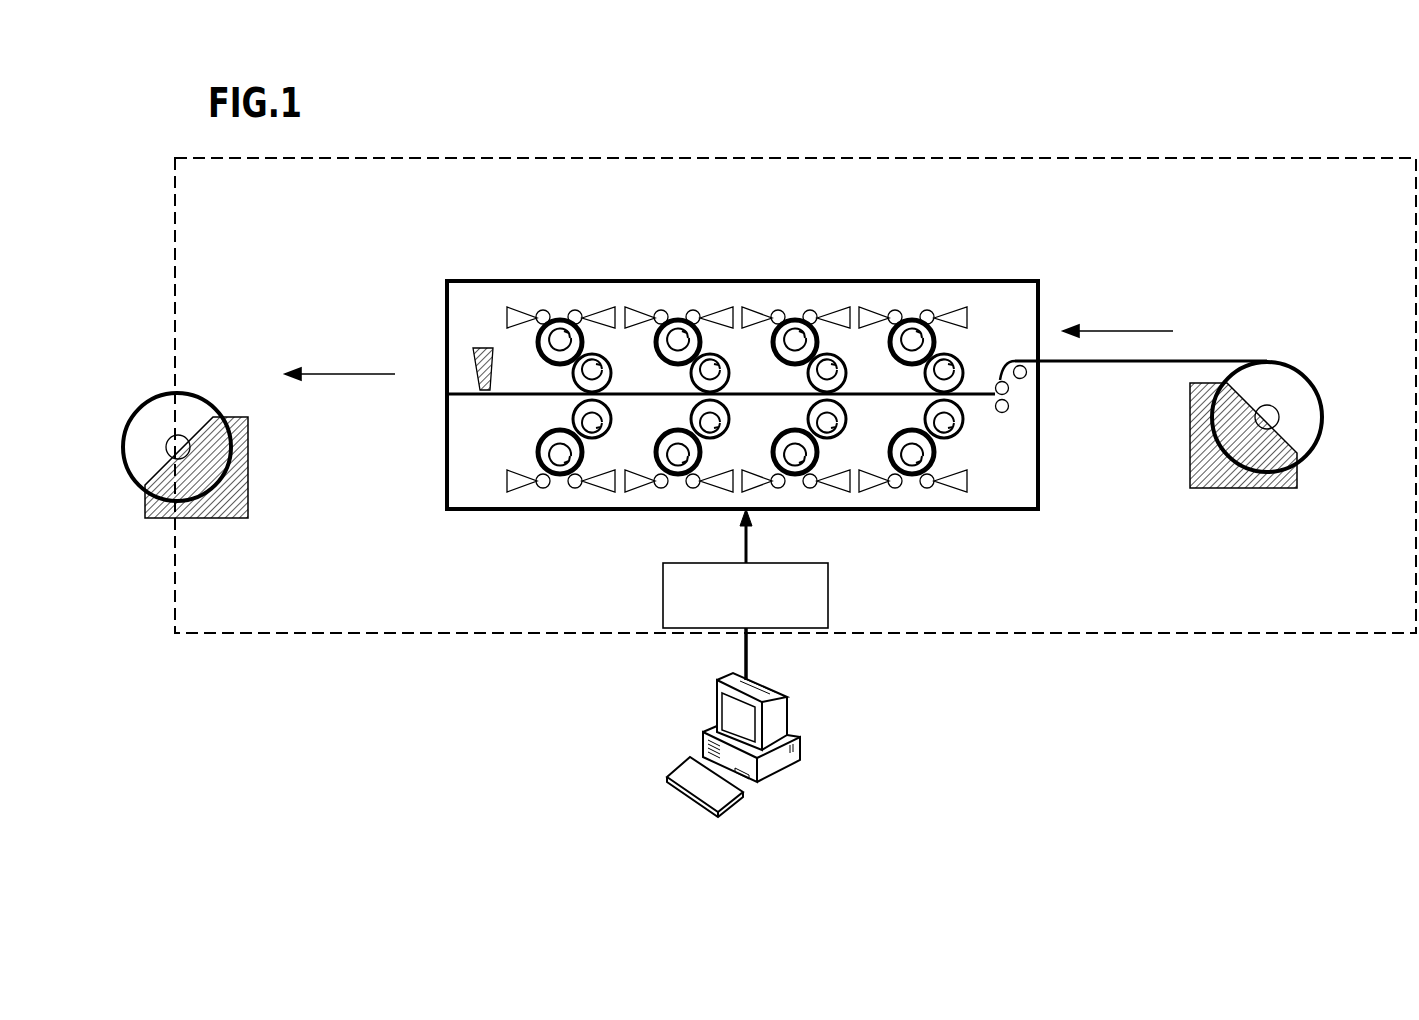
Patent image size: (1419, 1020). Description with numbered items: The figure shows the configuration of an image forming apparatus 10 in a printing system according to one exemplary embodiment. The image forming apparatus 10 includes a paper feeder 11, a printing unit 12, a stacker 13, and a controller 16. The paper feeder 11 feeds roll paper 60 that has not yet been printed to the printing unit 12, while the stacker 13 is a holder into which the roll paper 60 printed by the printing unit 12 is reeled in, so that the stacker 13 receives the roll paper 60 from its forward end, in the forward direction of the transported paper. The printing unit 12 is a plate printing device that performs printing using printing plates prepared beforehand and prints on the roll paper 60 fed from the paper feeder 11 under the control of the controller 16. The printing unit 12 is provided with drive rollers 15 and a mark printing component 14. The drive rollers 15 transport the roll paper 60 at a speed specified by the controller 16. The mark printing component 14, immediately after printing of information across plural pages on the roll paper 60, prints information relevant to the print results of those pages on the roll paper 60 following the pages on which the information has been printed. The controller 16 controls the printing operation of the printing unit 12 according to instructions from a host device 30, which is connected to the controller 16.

The image forming apparatus 10 is at (707, 158).
The paper feeder 11 is at (1190, 422).
The printing unit 12 is at (681, 281).
The stacker 13 is at (250, 490).
The mark printing component 14 is at (476, 348).
The drive rollers 15 is at (1003, 413).
The controller 16 is at (828, 600).
The host device 30 is at (803, 753).
The roll paper 60 is at (1192, 361).